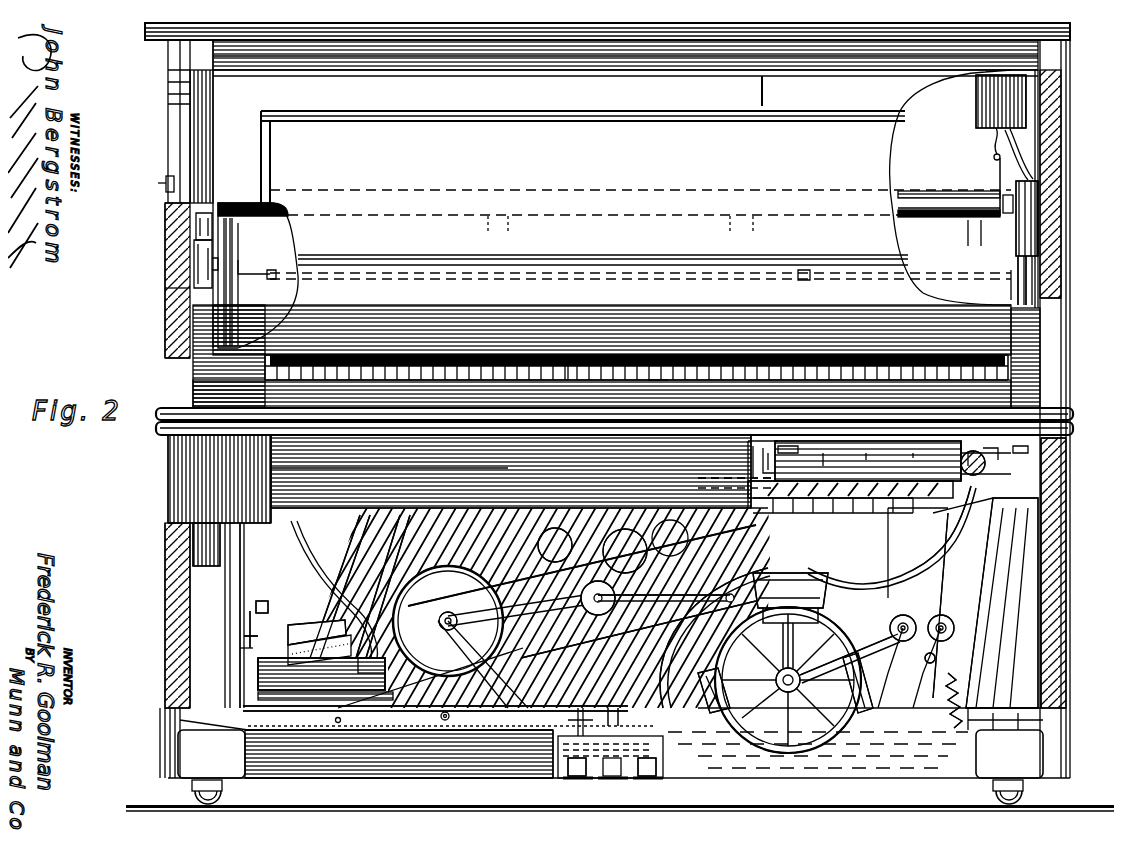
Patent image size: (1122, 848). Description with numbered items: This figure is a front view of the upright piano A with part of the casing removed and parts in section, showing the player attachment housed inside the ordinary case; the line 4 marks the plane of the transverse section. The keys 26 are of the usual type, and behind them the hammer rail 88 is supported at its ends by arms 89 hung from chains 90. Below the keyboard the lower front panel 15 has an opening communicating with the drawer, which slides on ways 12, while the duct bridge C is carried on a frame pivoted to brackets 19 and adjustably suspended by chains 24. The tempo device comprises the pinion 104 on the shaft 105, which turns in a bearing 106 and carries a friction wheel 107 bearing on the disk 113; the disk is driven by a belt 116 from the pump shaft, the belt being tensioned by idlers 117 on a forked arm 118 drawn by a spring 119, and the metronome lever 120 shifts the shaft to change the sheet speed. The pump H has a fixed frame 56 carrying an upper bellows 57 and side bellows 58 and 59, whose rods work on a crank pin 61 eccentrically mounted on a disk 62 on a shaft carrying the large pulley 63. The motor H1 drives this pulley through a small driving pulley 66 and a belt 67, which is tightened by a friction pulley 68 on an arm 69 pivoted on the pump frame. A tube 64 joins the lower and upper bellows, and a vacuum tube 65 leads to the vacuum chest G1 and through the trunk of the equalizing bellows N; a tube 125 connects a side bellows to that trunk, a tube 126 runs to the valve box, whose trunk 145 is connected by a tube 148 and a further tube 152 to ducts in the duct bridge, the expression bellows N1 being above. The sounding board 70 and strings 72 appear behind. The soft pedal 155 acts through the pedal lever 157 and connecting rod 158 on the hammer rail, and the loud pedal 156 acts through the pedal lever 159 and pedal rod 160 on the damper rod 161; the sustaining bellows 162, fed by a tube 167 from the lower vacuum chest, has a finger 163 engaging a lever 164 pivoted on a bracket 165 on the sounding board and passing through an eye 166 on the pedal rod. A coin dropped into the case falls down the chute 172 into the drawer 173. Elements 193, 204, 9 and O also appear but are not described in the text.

The section line 4 is at (757, 800).
The stop button 193 is at (160, 178).
The hammer rail 88 is at (240, 196).
The switch 204 is at (190, 216).
The pneumatic O is at (188, 250).
The chute 172 is at (165, 288).
The connecting rod 158 is at (206, 667).
The damper rod 161 is at (263, 272).
The keys 26 is at (575, 370).
The key bed 9 is at (641, 374).
The bearing 106 is at (785, 438).
The brackets 19 is at (818, 442).
The metronome lever 120 is at (860, 445).
The chains 24 is at (905, 445).
The ways 12 is at (1030, 410).
The pinion 104 is at (758, 463).
The lower front panel 15 is at (767, 468).
The duct bridge C is at (698, 496).
The shaft 105 is at (850, 491).
The friction wheel 107 is at (989, 460).
The tube 126 is at (1020, 290).
The tube 152 is at (1023, 263).
The expression bellows N1 is at (1030, 186).
The upright piano A is at (966, 96).
The arms 89 is at (985, 150).
The chains 90 is at (1020, 154).
The trunk 145 is at (1000, 207).
The tube 148 is at (1013, 270).
The disk 113 is at (965, 482).
The belt 116 is at (953, 605).
The vacuum tube 65 is at (930, 512).
The tube 64 is at (748, 530).
The vacuum chest G1 is at (389, 469).
The finger 163 is at (418, 508).
The drawer 173 is at (185, 546).
The pedal rod 160 is at (236, 548).
The sounding board 70 is at (340, 586).
The tube 167 is at (392, 545).
The bracket 165 is at (260, 595).
The lever 164 is at (300, 608).
The eye 166 is at (243, 630).
The sustaining bellows 162 is at (321, 674).
The pedal lever 159 is at (330, 722).
The pedal lever 157 is at (500, 718).
The loud pedal 156 is at (568, 778).
The soft pedal 155 is at (638, 778).
The strings 72 is at (560, 545).
The belt 67 is at (528, 590).
The friction pulley 68 is at (608, 584).
The arm 69 is at (638, 629).
The pump H is at (714, 638).
The motor H1 is at (448, 621).
The driving pulley 66 is at (449, 613).
The large pulley 63 is at (735, 670).
The disk 62 is at (796, 666).
The crank pin 61 is at (784, 699).
The bellows 59 is at (690, 690).
The upper bellows 57 is at (790, 590).
The fixed frame 56 is at (889, 611).
The bellows 58 is at (868, 683).
The idlers 117 is at (940, 599).
The forked arm 118 is at (910, 660).
The spring 119 is at (956, 702).
The tube 125 is at (1012, 605).
The equalizing bellows N is at (1040, 568).